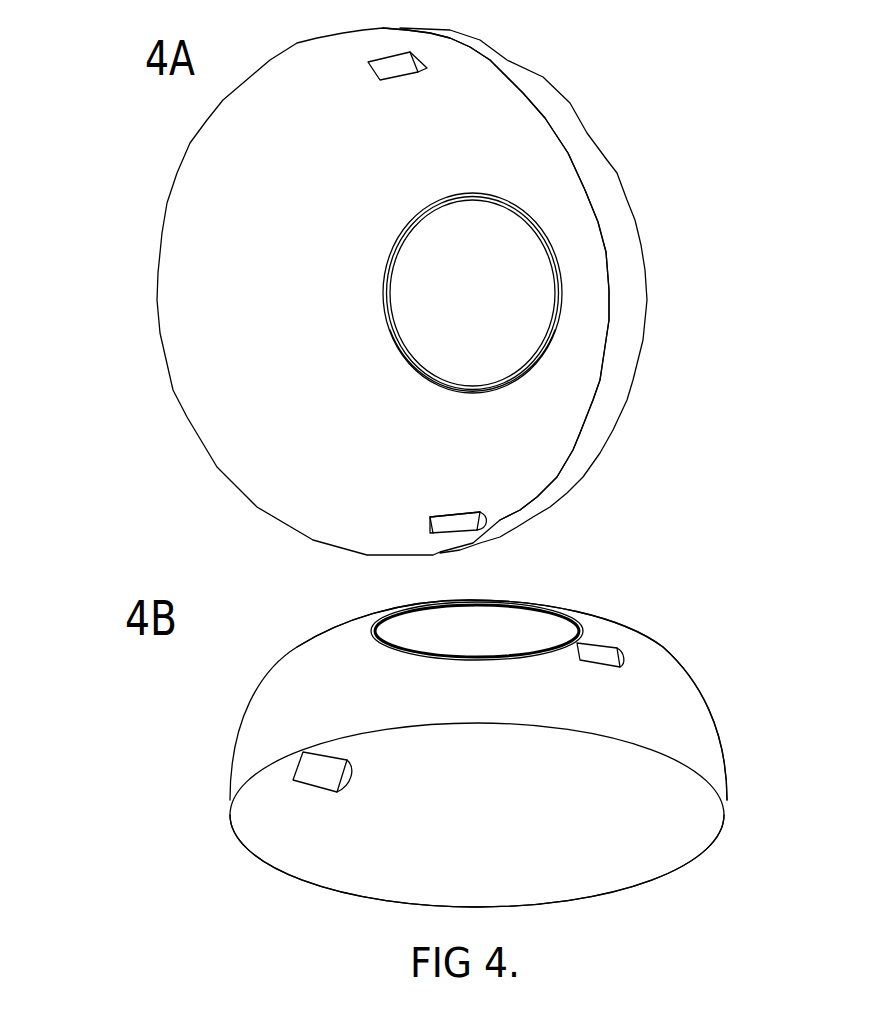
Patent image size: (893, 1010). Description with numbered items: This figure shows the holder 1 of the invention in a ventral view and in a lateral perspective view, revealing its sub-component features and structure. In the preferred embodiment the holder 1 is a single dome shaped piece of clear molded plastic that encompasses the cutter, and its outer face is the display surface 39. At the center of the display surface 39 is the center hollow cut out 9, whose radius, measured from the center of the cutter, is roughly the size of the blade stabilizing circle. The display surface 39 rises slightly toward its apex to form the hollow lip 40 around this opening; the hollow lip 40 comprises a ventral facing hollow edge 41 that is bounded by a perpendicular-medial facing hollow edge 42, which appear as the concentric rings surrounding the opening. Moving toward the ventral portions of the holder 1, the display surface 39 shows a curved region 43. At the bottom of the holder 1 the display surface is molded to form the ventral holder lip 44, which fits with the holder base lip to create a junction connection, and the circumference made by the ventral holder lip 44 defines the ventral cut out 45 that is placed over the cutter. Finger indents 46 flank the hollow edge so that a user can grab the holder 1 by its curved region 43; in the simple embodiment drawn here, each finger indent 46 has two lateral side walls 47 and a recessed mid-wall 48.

In FIG. 4A, the holder 1 is at (163, 152).
In FIG. 4B, the holder 1 is at (222, 697).
In FIG. 4A, the center hollow cut out 9 is at (507, 290).
In FIG. 4B, the center hollow cut out 9 is at (493, 617).
In FIG. 4A, the display surface 39 is at (220, 295).
In FIG. 4B, the display surface 39 is at (677, 722).
In FIG. 4A, the hollow lip 40 is at (562, 331).
In FIG. 4B, the hollow lip 40 is at (587, 617).
In FIG. 4A, the ventral facing hollow edge 41 is at (515, 371).
In FIG. 4A, the perpendicular-medial facing hollow edge 42 is at (500, 390).
In FIG. 4B, the curved region 43 is at (667, 645).
In FIG. 4A, the ventral holder lip 44 is at (177, 392).
In FIG. 4B, the ventral holder lip 44 is at (723, 827).
In FIG. 4B, the ventral cut out 45 is at (437, 833).
In FIG. 4A, the finger indent 46 is at (413, 70).
In FIG. 4B, the finger indent 46 is at (283, 768).
In FIG. 4A, the lateral side wall 47 is at (480, 513).
In FIG. 4B, the lateral side wall 47 is at (600, 655).
In FIG. 4A, the recessed mid-wall 48 is at (450, 522).